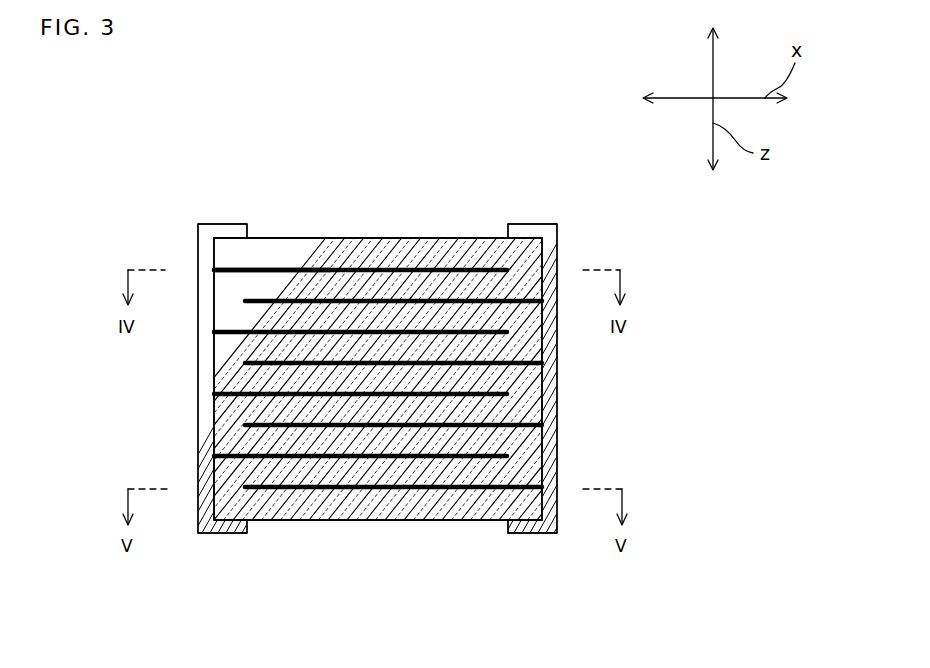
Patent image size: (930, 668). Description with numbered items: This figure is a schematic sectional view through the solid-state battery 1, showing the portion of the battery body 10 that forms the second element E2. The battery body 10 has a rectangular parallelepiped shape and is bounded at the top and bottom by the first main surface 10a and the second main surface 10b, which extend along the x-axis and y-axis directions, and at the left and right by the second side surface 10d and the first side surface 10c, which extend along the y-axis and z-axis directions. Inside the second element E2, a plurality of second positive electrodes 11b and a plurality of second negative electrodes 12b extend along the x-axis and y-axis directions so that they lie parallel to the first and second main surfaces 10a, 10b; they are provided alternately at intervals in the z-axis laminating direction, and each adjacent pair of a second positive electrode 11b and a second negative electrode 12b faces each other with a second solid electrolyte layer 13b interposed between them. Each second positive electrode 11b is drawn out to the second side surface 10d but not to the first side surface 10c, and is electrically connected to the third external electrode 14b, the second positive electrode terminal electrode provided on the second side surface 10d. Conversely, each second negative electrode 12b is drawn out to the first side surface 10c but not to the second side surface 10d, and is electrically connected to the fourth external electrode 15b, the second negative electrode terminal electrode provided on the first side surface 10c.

The solid-state battery 1 is at (543, 164).
The battery body 10 is at (368, 233).
The first main surface 10a is at (262, 237).
The second main surface 10b is at (393, 522).
The first side surface 10c is at (542, 426).
The second side surface 10d is at (214, 412).
The second positive electrode 11b is at (420, 267).
The second negative electrode 12b is at (483, 304).
The second solid electrolyte layer 13b is at (477, 287).
The third external electrode 14b is at (198, 357).
The fourth external electrode 15b is at (557, 387).
The second element E2 is at (327, 266).